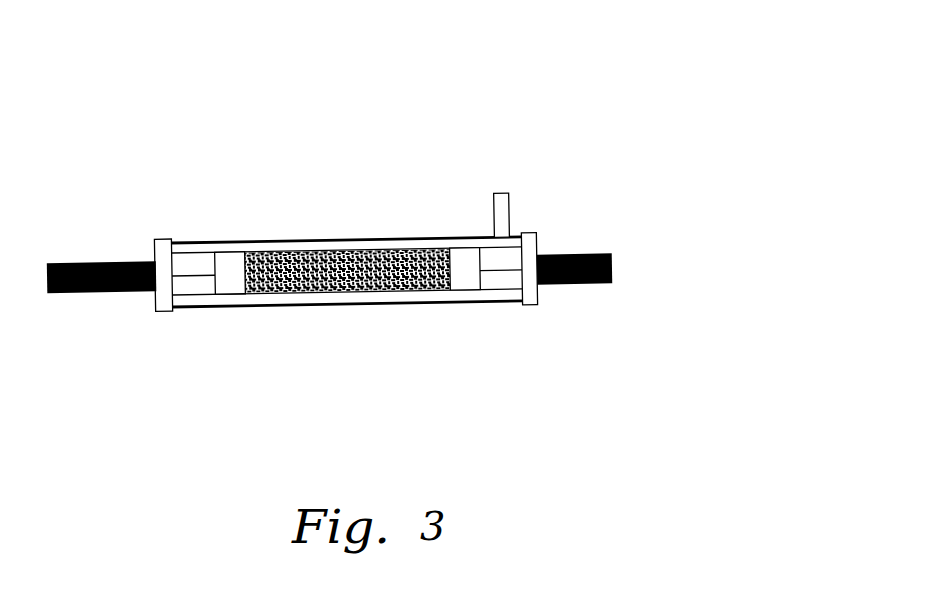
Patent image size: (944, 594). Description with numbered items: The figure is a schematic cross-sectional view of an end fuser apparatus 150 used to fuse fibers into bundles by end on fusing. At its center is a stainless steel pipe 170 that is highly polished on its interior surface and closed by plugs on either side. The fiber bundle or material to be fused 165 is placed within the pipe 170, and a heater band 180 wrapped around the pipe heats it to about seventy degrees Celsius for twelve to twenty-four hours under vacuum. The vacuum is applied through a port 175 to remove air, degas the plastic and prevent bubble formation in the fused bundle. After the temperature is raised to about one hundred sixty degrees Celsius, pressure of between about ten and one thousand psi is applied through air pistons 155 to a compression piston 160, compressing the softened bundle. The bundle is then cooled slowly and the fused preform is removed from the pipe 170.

The end fuser apparatus 150 is at (383, 160).
The air pistons 155 is at (60, 262).
The compression piston 160 is at (229, 287).
The fiber bundle or material to be fused 165 is at (438, 293).
The stainless steel pipe 170 is at (305, 297).
The port 175 is at (503, 193).
The heater band 180 is at (223, 243).